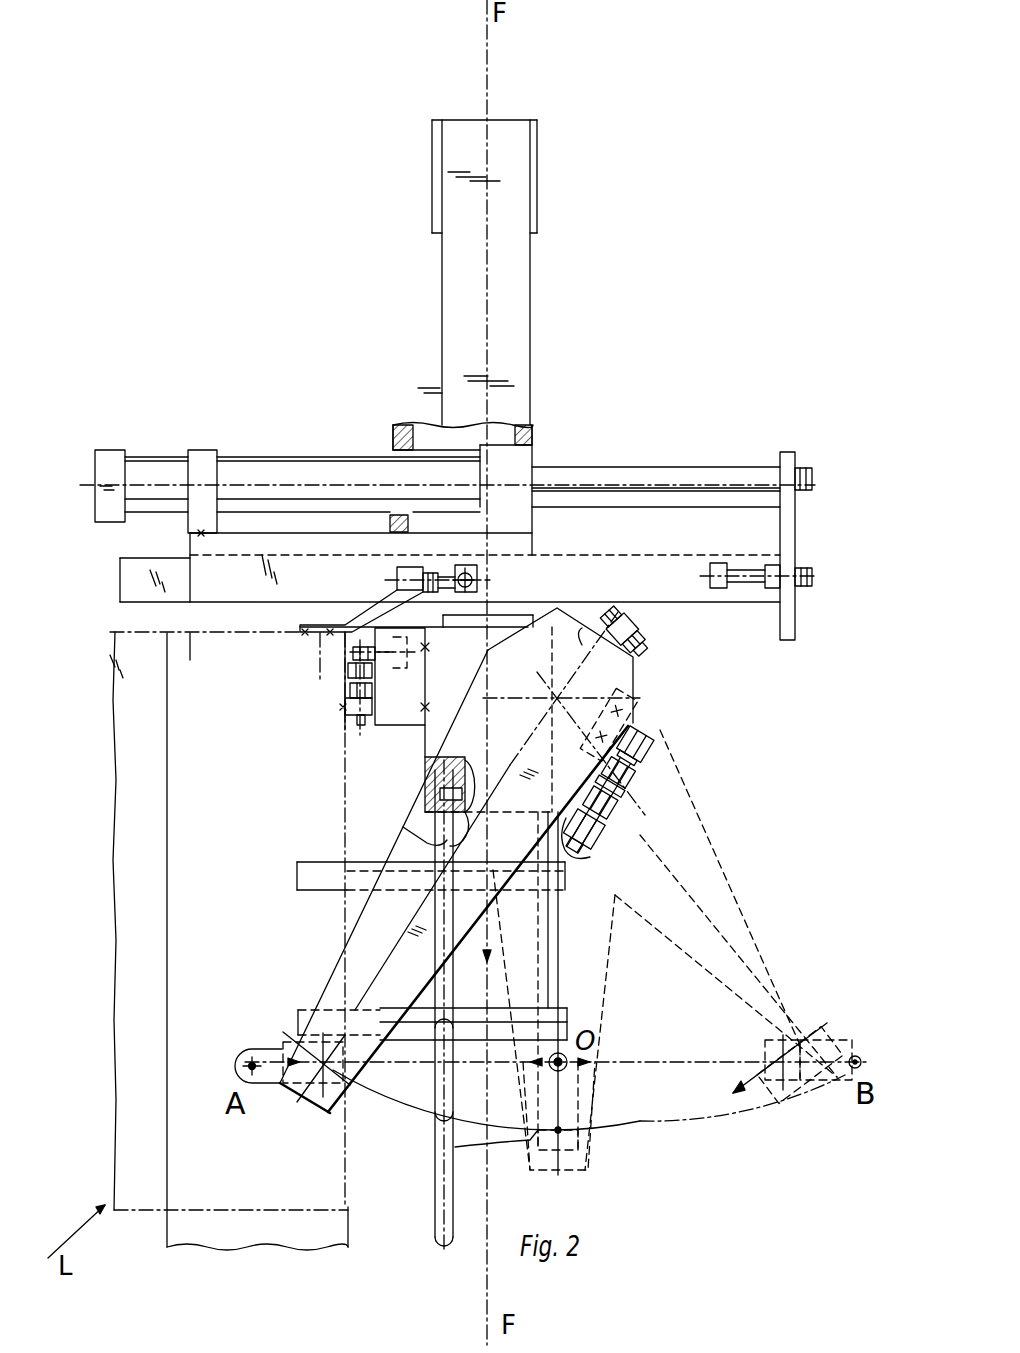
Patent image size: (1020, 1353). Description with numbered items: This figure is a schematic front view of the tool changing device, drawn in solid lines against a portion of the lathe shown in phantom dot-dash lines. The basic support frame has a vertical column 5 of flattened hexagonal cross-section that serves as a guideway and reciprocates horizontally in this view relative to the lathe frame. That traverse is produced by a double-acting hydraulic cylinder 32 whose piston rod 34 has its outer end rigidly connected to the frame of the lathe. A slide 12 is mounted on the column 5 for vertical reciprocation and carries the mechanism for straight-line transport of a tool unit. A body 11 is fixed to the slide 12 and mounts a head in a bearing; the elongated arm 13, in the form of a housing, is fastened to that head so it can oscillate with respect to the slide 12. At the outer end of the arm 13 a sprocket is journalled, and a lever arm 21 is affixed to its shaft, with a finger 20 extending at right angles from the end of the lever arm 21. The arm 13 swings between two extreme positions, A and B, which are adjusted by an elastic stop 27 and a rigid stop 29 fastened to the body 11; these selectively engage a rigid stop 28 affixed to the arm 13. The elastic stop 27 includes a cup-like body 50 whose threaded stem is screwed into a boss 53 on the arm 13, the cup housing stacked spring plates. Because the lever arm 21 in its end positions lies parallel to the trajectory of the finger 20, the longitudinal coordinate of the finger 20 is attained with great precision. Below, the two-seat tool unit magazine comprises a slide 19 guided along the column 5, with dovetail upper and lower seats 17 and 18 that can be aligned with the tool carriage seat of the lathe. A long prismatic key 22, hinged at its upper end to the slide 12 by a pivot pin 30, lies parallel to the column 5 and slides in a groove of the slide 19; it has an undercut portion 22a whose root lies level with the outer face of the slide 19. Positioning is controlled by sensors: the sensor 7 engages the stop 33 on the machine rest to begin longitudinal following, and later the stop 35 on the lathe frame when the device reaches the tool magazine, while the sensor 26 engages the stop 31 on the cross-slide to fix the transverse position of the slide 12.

The column 5 is at (523, 300).
The sensor 7 is at (472, 558).
The body 11 is at (582, 628).
The slide 12 is at (442, 720).
The arm 13 is at (335, 987).
The upper seat 17 is at (333, 882).
The lower seat 18 is at (555, 1008).
The slide 19 is at (522, 930).
The finger 20 is at (862, 1058).
The lever arm 21 is at (828, 1040).
The key 22 is at (447, 996).
The undercut portion 22a is at (447, 1110).
The sensor 26 is at (368, 652).
The elastic stop 27 is at (705, 828).
The rigid stop 28 is at (648, 757).
The rigid stop 29 is at (640, 655).
The pivot pin 30 is at (425, 795).
The stop 31 is at (345, 678).
The hydraulic cylinder 32 is at (350, 497).
The stop 33 is at (445, 560).
The piston rod 34 is at (636, 480).
The stop 35 is at (717, 563).
The cup-like body 50 is at (600, 832).
The boss 53 is at (630, 788).